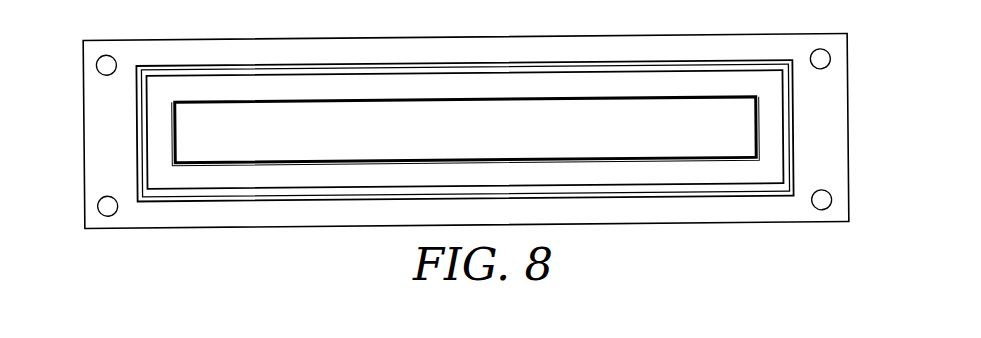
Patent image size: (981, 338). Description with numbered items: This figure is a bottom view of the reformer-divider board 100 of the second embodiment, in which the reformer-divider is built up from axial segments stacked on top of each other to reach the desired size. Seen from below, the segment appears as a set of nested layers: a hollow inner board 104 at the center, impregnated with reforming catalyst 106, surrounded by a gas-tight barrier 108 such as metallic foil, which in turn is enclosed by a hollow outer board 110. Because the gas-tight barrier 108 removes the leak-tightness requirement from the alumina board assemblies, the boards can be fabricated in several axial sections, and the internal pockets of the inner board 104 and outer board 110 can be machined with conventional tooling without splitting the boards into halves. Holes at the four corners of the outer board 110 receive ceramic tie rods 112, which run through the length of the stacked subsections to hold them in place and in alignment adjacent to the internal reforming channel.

The reformer-divider board 100 is at (183, 275).
The hollow inner board 104 is at (485, 85).
The reforming catalyst 106 is at (593, 100).
The gas-tight barrier 108 is at (402, 65).
The hollow outer board 110 is at (252, 45).
The ceramic tie rods 112 is at (105, 67).